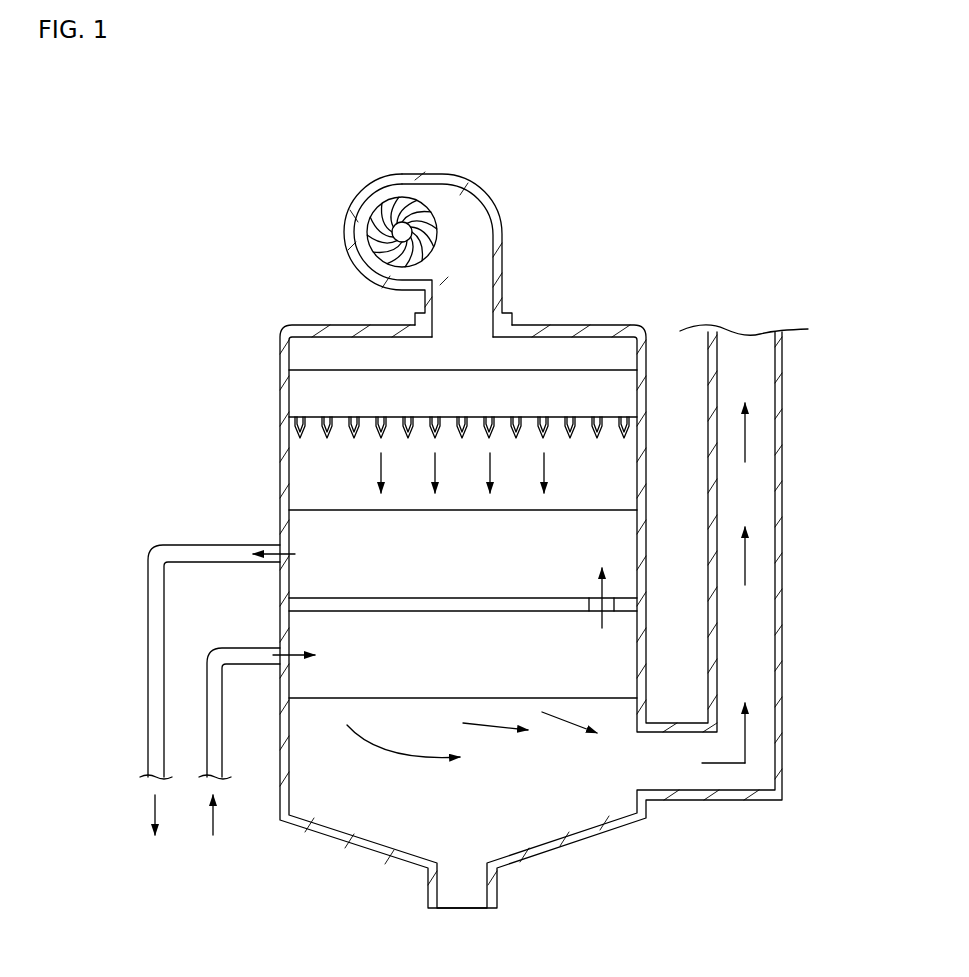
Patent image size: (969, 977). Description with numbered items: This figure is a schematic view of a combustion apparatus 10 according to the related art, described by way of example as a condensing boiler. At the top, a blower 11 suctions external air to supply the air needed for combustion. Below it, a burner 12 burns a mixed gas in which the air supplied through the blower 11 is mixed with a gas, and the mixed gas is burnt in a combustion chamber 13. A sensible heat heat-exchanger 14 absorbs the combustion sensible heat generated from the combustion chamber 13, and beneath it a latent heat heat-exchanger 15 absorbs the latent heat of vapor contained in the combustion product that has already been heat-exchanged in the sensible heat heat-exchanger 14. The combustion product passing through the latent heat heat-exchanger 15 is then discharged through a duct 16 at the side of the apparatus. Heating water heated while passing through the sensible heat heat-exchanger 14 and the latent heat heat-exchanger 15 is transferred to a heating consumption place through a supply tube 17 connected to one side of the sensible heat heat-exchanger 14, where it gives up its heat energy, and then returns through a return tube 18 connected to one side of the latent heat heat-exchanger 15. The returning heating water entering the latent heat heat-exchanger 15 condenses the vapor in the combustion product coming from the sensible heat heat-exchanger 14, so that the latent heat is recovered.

The combustion apparatus 10 is at (222, 171).
The blower 11 is at (420, 176).
The burner 12 is at (305, 397).
The combustion chamber 13 is at (305, 465).
The sensible heat heat-exchanger 14 is at (323, 532).
The latent heat heat-exchanger 15 is at (303, 627).
The duct 16 is at (780, 478).
The supply tube 17 is at (155, 657).
The return tube 18 is at (212, 717).